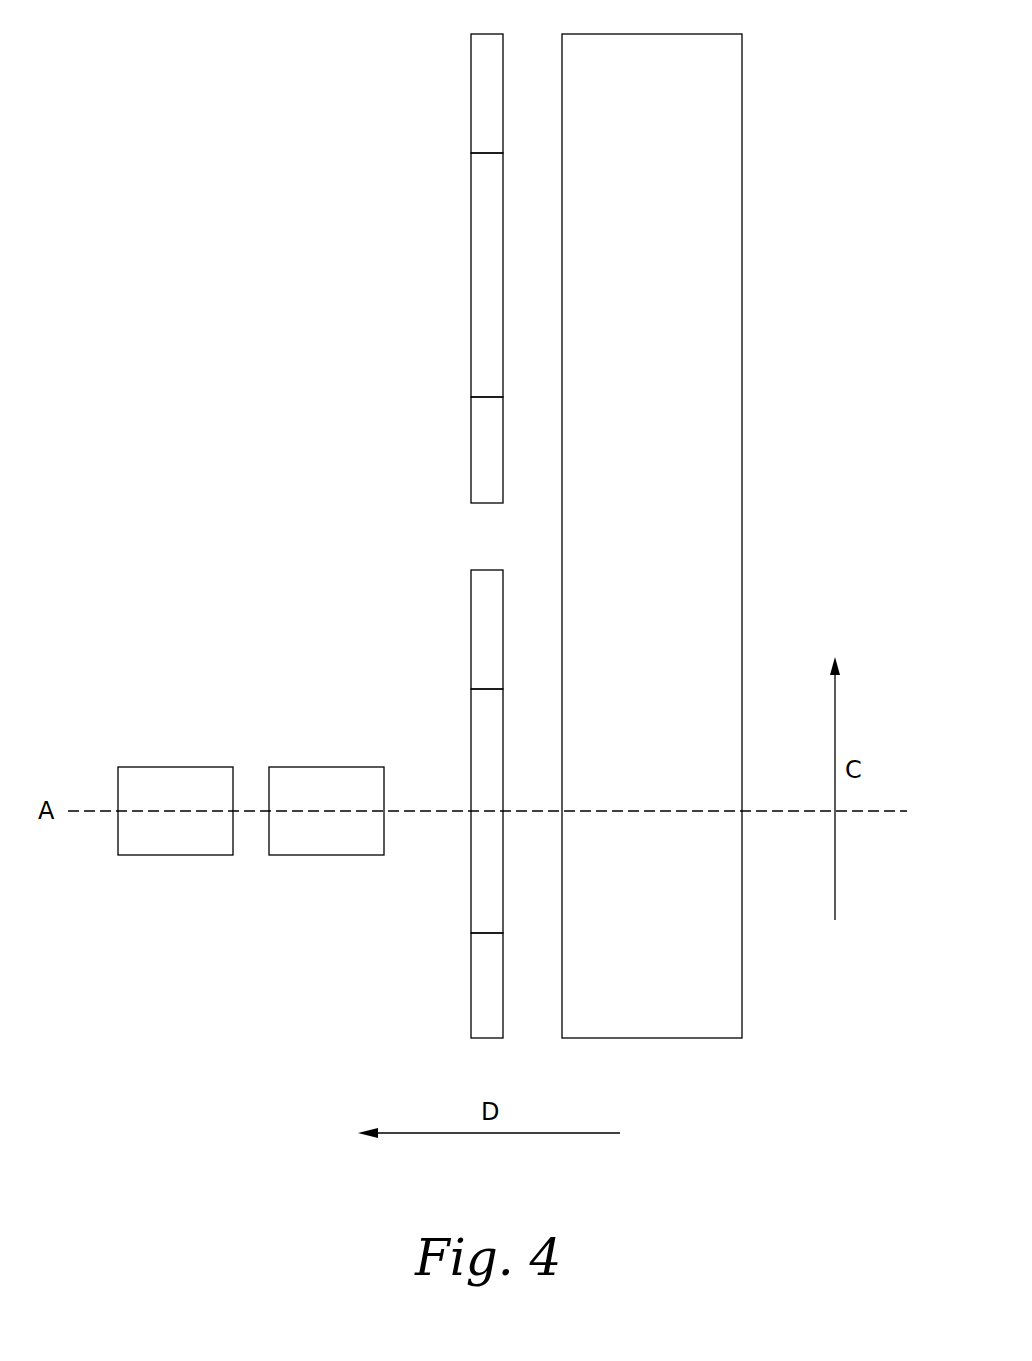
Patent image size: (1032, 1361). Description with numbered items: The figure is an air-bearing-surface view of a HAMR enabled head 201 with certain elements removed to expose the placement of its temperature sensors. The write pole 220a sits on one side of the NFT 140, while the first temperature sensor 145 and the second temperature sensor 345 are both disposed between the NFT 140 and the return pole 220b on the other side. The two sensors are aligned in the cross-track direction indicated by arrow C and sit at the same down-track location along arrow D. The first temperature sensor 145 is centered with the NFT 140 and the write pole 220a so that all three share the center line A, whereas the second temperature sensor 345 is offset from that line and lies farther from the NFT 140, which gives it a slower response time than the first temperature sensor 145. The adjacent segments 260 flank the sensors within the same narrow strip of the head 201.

The HAMR enabled head 201 is at (236, 281).
The write pole 220a is at (177, 765).
The NFT 140 is at (328, 765).
The return pole 220b is at (675, 550).
The segment portions 260 is at (471, 71).
The second temperature sensor 345 is at (471, 221).
The first temperature sensor 145 is at (471, 715).